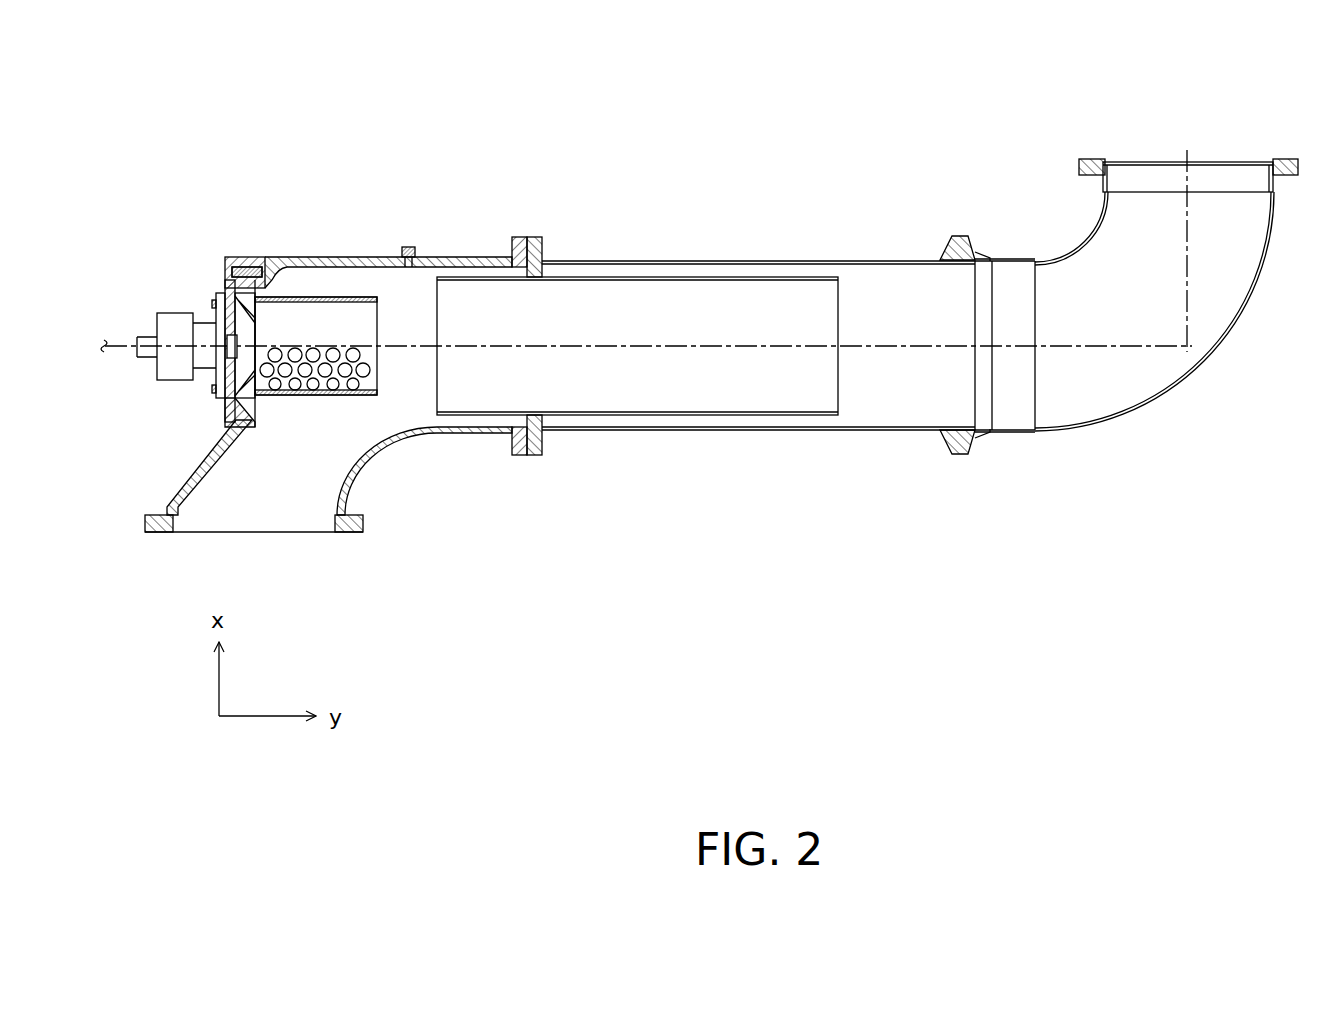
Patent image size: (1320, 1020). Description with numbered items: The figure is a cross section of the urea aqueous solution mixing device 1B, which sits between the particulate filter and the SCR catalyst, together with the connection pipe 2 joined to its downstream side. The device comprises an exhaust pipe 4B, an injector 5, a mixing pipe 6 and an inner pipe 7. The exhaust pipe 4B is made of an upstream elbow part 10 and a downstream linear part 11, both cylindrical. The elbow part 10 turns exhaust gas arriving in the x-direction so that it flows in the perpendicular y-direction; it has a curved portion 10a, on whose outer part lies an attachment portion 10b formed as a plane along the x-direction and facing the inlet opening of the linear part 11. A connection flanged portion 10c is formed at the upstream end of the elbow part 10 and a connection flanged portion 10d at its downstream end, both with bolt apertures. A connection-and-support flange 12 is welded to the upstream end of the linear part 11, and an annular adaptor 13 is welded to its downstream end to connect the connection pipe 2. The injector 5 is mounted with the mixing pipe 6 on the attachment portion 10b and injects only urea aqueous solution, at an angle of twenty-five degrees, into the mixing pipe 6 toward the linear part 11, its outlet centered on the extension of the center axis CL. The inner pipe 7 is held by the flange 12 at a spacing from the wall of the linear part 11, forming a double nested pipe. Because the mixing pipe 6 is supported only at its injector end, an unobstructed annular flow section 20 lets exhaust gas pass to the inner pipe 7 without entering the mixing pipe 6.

The urea aqueous solution mixing device 1B is at (325, 154).
The connection pipe 2 is at (1262, 268).
The exhaust pipe 4B is at (924, 223).
The injector 5 is at (175, 322).
The mixing pipe 6 is at (333, 297).
The inner pipe 7 is at (702, 415).
The elbow part 10 is at (324, 375).
The curved portion 10a is at (402, 437).
The attachment portion 10b is at (232, 412).
The connection flanged portion 10c is at (152, 532).
The connection flanged portion 10d is at (512, 237).
The linear part 11 is at (789, 245).
The connection-and-support flange 12 is at (547, 237).
The annular adaptor 13 is at (943, 455).
The annular flow section 20 is at (387, 409).
The center axis CL is at (690, 340).